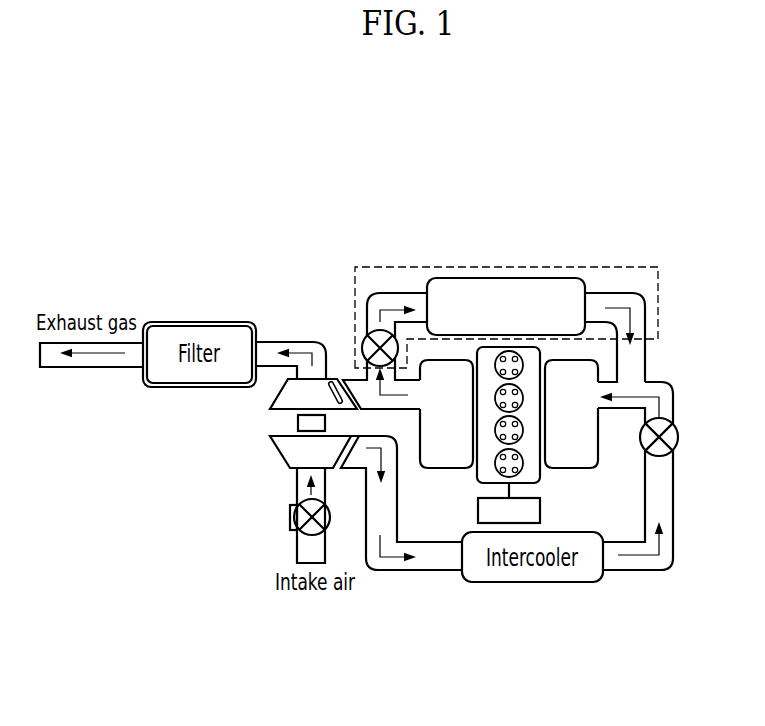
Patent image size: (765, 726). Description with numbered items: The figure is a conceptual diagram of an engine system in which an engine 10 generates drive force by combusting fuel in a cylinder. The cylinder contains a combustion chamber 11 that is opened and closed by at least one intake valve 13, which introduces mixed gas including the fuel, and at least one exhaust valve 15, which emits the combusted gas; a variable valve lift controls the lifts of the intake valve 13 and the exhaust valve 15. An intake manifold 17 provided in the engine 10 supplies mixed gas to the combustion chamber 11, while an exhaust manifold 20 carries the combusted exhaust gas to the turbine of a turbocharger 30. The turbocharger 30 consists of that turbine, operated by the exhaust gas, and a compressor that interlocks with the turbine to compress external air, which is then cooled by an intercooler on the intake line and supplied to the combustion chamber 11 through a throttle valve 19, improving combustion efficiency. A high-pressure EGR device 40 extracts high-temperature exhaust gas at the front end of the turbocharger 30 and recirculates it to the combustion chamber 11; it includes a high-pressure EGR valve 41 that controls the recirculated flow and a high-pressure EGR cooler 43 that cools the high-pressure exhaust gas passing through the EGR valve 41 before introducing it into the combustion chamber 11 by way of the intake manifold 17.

The engine 10 is at (562, 500).
The combustion chamber 11 is at (496, 466).
The intake valve 13 is at (524, 475).
The exhaust valve 15 is at (498, 474).
The intake manifold 17 is at (598, 442).
The throttle valve 19 is at (678, 437).
The exhaust manifold 20 is at (420, 440).
The turbocharger 30 is at (256, 426).
The high-pressure EGR device 40 is at (628, 256).
The high-pressure EGR valve 41 is at (363, 341).
The high-pressure EGR cooler 43 is at (507, 278).